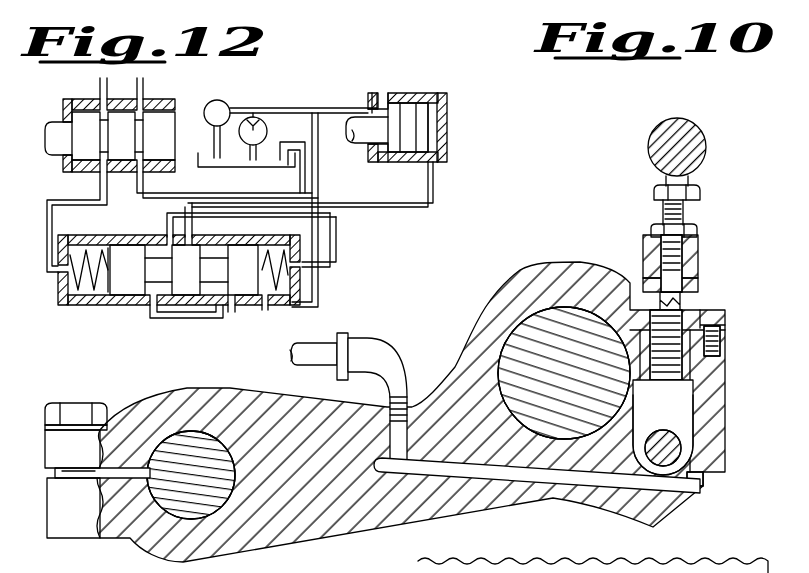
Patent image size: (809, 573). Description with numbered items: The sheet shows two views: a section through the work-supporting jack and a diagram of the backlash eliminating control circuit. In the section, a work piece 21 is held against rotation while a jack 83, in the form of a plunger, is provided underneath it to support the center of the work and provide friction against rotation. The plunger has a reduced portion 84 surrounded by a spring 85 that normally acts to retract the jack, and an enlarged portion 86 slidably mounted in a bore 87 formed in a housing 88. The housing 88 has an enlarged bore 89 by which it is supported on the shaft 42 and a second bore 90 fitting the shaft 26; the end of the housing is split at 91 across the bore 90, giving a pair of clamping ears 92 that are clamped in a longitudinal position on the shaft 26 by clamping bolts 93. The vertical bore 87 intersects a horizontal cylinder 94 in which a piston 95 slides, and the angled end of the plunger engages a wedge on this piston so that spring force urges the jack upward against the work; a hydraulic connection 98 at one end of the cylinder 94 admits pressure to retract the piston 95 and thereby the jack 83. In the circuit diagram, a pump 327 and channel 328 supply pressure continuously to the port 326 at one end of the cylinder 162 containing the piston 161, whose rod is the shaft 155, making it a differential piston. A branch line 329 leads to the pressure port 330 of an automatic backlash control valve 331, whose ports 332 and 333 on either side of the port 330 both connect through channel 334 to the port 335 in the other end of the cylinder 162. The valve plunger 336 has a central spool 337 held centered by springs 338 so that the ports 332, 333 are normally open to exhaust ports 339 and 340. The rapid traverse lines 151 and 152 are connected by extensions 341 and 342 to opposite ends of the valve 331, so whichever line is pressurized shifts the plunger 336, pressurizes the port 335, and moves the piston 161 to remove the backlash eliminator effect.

In FIG. 10, the work piece 21 is at (685, 130).
In FIG. 10, the shaft 26 is at (173, 445).
In FIG. 10, the shaft 42 is at (543, 322).
In FIG. 10, the jack 83 is at (698, 192).
In FIG. 10, the reduced portion 84 is at (678, 313).
In FIG. 10, the spring 85 is at (728, 357).
In FIG. 10, the enlarged portion 86 is at (668, 401).
In FIG. 10, the bore 87 is at (717, 374).
In FIG. 10, the housing 88 is at (485, 308).
In FIG. 10, the enlarged bore 89 is at (576, 306).
In FIG. 10, the second bore 90 is at (220, 438).
In FIG. 10, the split 91 is at (120, 465).
In FIG. 10, the clamping ears 92 is at (58, 503).
In FIG. 10, the clamping bolts 93 is at (92, 402).
In FIG. 10, the cylinder 94 is at (692, 455).
In FIG. 10, the piston 95 is at (680, 447).
In FIG. 10, the hydraulic connection 98 is at (685, 486).
In FIG. 12, the line 151 is at (100, 90).
In FIG. 12, the line 152 is at (143, 80).
In FIG. 12, the shaft 155 is at (362, 140).
In FIG. 12, the piston 161 is at (398, 112).
In FIG. 12, the cylinder 162 is at (447, 105).
In FIG. 12, the port 326 is at (370, 110).
In FIG. 12, the pump 327 is at (226, 102).
In FIG. 12, the channel 328 is at (284, 108).
In FIG. 12, the branch line 329 is at (325, 176).
In FIG. 12, the port 330 is at (170, 240).
In FIG. 12, the automatic backlash control valve 331 is at (130, 305).
In FIG. 12, the port 332 is at (160, 240).
In FIG. 12, the port 333 is at (200, 226).
In FIG. 12, the channel 334 is at (403, 208).
In FIG. 12, the port 335 is at (432, 160).
In FIG. 12, the valve plunger 336 is at (266, 307).
In FIG. 12, the central spool 337 is at (188, 295).
In FIG. 12, the springs 338 is at (78, 285).
In FIG. 12, the exhaust port 339 is at (148, 312).
In FIG. 12, the exhaust port 340 is at (236, 312).
In FIG. 12, the extension 341 is at (47, 220).
In FIG. 12, the extension 342 is at (338, 238).